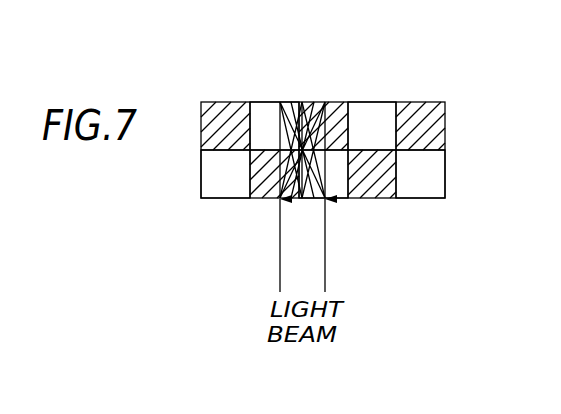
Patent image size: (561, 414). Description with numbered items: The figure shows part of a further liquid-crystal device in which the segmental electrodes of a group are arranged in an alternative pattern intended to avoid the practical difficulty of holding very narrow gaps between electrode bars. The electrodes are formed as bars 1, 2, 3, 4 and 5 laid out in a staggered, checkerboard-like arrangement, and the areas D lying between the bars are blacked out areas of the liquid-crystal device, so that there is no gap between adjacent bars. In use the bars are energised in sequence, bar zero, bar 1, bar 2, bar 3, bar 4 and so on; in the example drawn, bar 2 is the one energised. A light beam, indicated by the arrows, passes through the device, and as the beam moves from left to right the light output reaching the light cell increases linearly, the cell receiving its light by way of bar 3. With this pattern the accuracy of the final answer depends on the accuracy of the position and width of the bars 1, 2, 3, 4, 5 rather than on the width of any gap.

The bar 1 is at (225, 102).
The bar 2 is at (263, 198).
The bar 3 is at (325, 102).
The bar 4 is at (370, 198).
The fifth photoelectric element 5 is at (420, 102).
The blacked out areas D is at (268, 102).